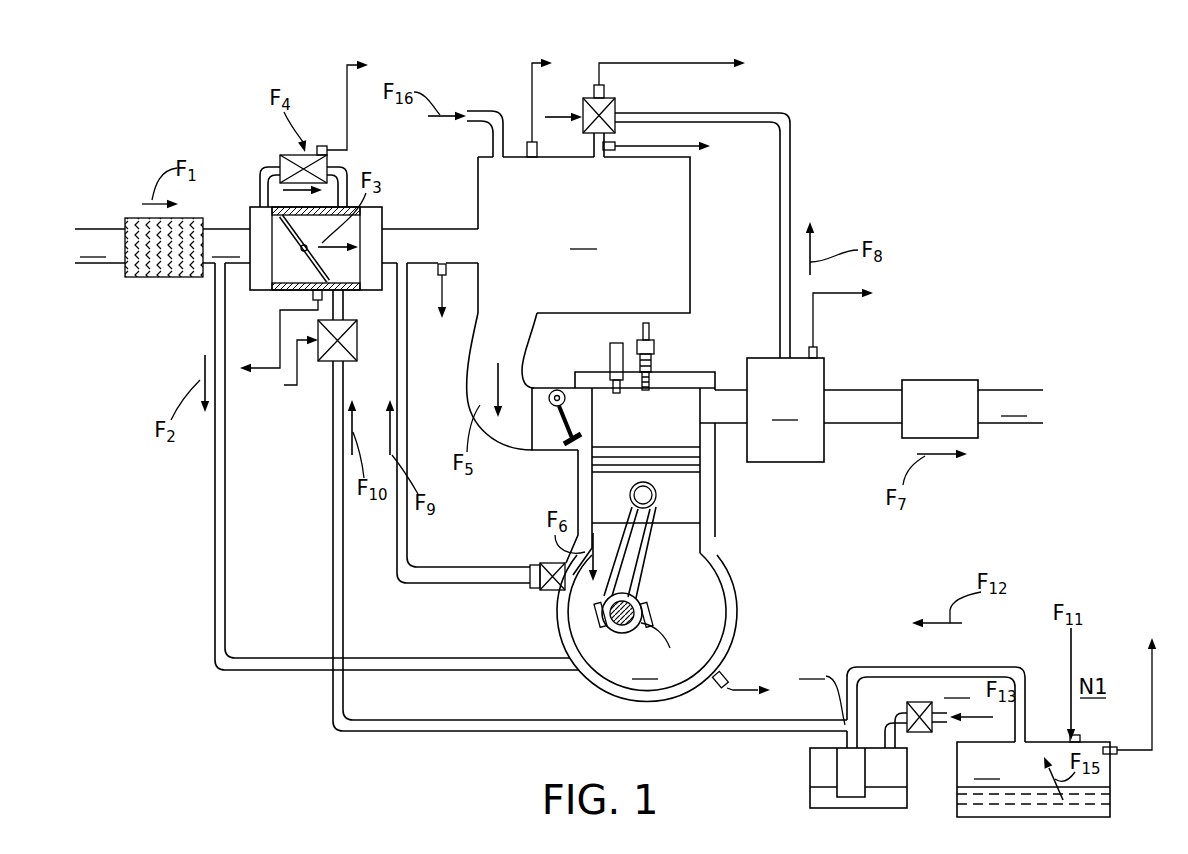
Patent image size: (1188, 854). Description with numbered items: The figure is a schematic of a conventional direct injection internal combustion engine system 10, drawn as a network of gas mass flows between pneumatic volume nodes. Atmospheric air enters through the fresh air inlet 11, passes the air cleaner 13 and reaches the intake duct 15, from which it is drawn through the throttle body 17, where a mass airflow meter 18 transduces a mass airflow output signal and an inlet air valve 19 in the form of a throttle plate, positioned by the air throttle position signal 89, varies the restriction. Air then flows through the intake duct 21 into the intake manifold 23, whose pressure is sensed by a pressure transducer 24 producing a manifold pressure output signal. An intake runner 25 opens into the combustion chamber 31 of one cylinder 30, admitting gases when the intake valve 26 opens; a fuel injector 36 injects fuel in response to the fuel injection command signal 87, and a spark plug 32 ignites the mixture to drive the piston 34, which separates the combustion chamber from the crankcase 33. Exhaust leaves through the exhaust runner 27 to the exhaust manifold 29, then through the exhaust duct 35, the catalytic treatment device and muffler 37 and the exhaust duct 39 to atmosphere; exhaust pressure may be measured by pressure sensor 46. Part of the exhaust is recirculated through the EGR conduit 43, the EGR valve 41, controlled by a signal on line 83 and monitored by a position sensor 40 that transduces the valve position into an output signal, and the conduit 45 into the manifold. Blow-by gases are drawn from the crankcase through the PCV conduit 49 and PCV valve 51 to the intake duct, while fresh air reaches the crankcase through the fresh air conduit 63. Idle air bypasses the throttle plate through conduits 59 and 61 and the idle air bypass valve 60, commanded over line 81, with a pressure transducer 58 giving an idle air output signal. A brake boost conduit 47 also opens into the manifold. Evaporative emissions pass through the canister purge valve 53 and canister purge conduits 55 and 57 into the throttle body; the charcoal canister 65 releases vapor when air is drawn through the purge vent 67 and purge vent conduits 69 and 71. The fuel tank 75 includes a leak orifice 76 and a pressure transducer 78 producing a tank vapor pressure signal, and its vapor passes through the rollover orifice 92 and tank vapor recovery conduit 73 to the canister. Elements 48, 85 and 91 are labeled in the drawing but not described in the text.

The engine system 10 is at (913, 165).
The fresh air inlet 11 is at (103, 228).
The air cleaner 13 is at (160, 277).
The intake duct 15 is at (217, 228).
The throttle body 17 is at (262, 290).
The mass airflow meter 18 is at (323, 295).
The inlet air valve 19 is at (312, 285).
The intake duct 21 is at (428, 229).
The intake manifold 23 is at (478, 183).
The pressure transducer 24 is at (538, 150).
The intake runner 25 is at (522, 348).
The intake valve 26 is at (559, 390).
The exhaust runner 27 is at (728, 423).
The exhaust manifold 29 is at (812, 462).
The cylinder 30 is at (756, 563).
The combustion chamber 31 is at (676, 395).
The spark plug 32 is at (652, 347).
The crankcase 33 is at (722, 625).
The piston 34 is at (685, 505).
The exhaust duct 35 is at (850, 390).
The fuel injector 36 is at (641, 323).
The catalytic treatment device and muffler 37 is at (930, 380).
The exhaust duct 39 is at (1000, 390).
The position sensor 40 is at (604, 90).
The EGR valve 41 is at (616, 106).
The EGR conduit 43 is at (680, 113).
The conduit 45 is at (594, 145).
The pressure sensor 46 is at (608, 150).
The brake boost conduit 47 is at (495, 110).
The intake air temperature sensor 48 is at (446, 270).
The PCV conduit 49 is at (410, 408).
The PCV valve 51 is at (534, 563).
The canister purge valve 53 is at (357, 342).
The canister purge conduit 55 is at (332, 475).
The canister purge conduit 57 is at (340, 303).
The pressure transducer 58 is at (322, 146).
The conduit 59 is at (262, 205).
The idle air bypass valve 60 is at (314, 147).
The conduit 61 is at (347, 170).
The fresh air conduit 63 is at (215, 476).
The charcoal canister 65 is at (812, 790).
The purge vent 67 is at (918, 734).
The purge vent conduit 69 is at (886, 730).
The purge vent conduit 71 is at (928, 702).
The tank vapor recovery conduit 73 is at (972, 667).
The fuel tank 75 is at (1048, 742).
The leak orifice 76 is at (1081, 740).
The pressure transducer 78 is at (1118, 754).
The line 81 is at (306, 128).
The line 83 is at (560, 115).
The purge valve control signal 85 is at (288, 366).
The fuel injection command signal 87 is at (616, 335).
The air throttle position signal 89 is at (392, 212).
The crankcase passage 91 is at (555, 462).
The rollover orifice 92 is at (1022, 670).